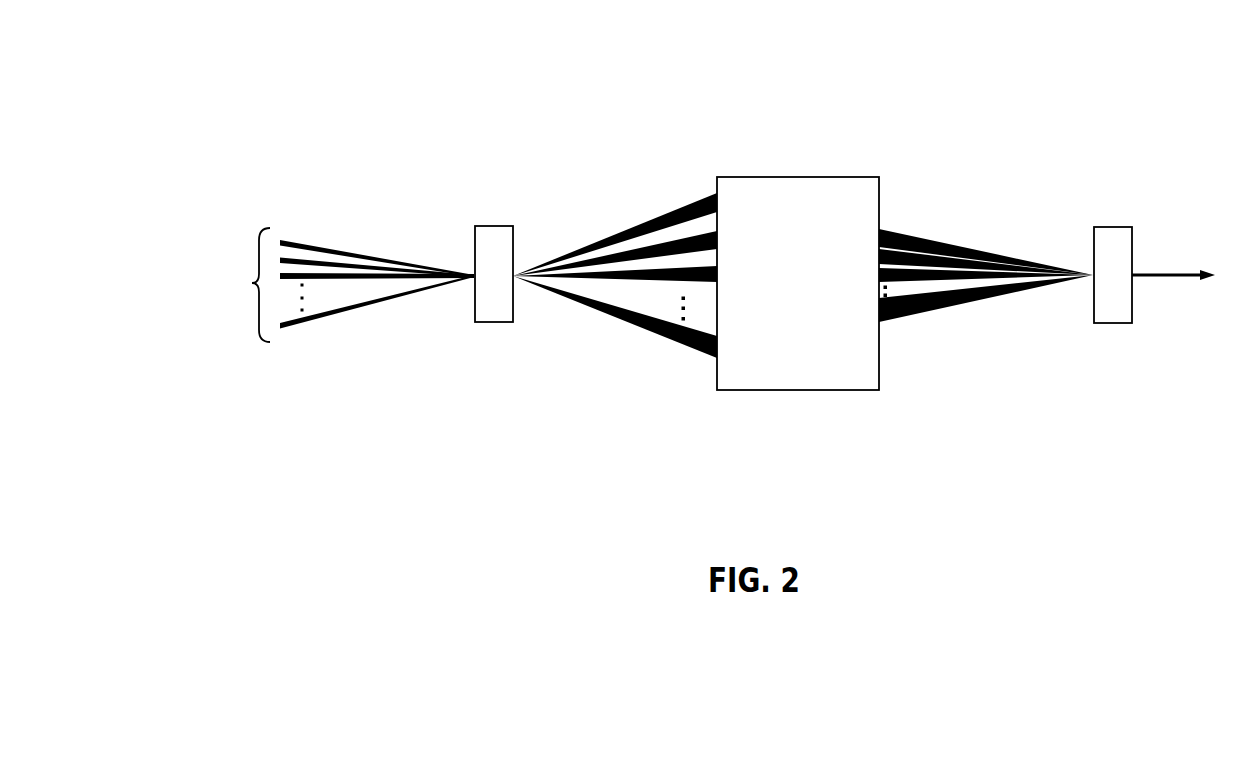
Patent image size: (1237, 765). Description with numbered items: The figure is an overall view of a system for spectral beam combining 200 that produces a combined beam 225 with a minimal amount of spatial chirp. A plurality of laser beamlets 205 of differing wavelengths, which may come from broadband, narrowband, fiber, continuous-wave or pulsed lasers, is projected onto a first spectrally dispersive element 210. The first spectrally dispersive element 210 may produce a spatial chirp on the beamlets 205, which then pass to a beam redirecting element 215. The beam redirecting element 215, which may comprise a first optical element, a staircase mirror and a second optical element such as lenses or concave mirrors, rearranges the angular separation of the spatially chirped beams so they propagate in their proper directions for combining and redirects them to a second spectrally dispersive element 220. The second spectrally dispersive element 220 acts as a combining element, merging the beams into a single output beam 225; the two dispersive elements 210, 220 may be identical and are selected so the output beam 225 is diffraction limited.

The system for spectral beam combining 200 is at (508, 55).
The laser beamlets 205 is at (333, 248).
The first spectrally dispersive element 210 is at (496, 189).
The beam redirecting element 215 is at (771, 140).
The second spectrally dispersive element 220 is at (1005, 240).
The combined output beam 225 is at (1157, 253).